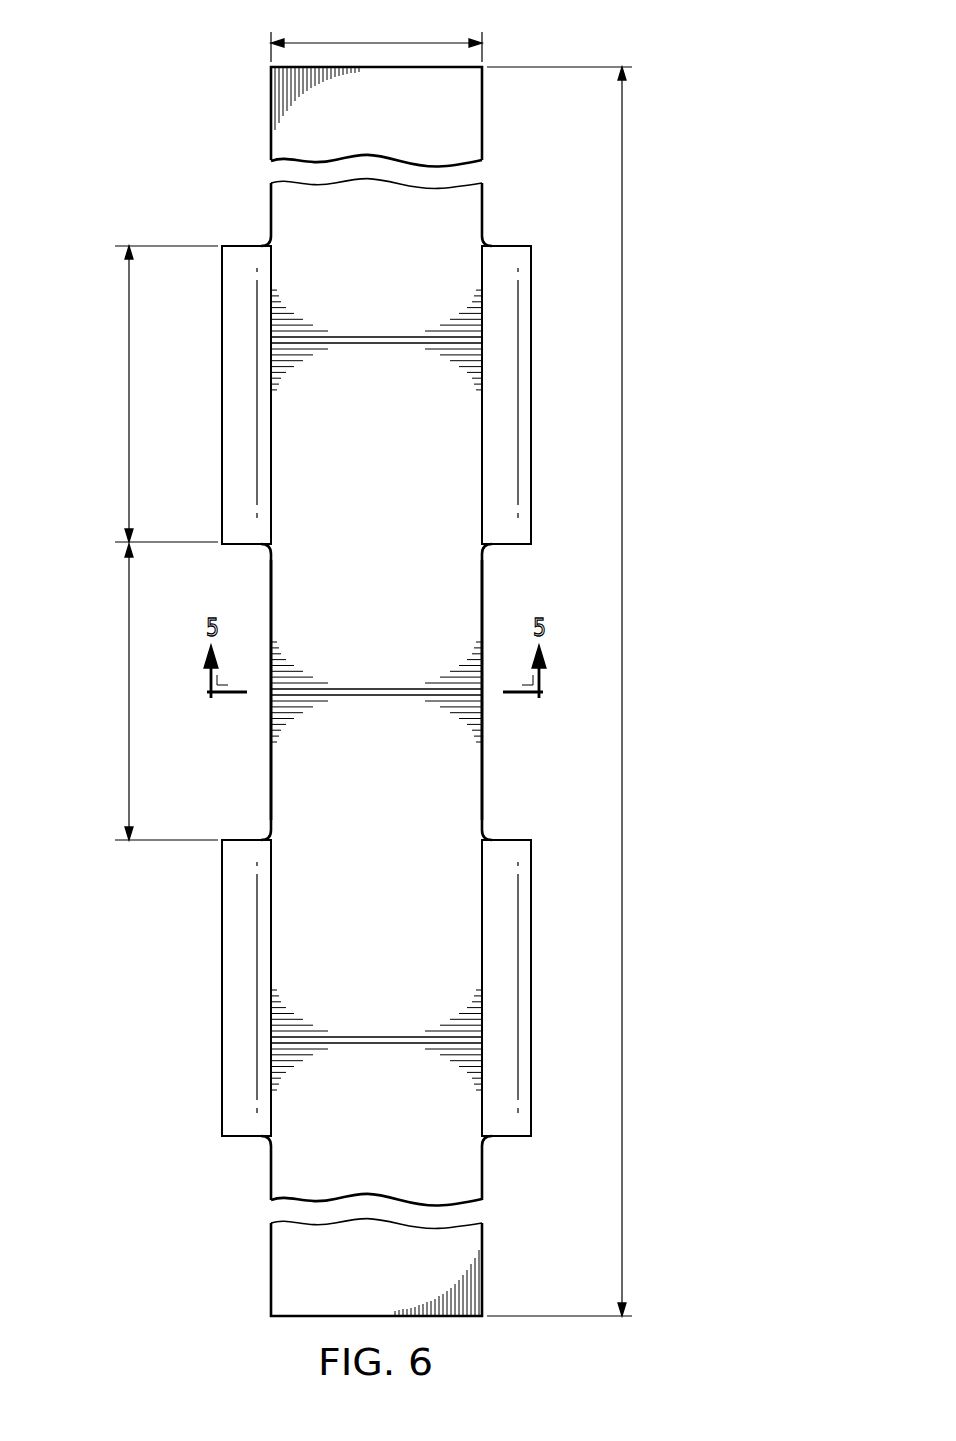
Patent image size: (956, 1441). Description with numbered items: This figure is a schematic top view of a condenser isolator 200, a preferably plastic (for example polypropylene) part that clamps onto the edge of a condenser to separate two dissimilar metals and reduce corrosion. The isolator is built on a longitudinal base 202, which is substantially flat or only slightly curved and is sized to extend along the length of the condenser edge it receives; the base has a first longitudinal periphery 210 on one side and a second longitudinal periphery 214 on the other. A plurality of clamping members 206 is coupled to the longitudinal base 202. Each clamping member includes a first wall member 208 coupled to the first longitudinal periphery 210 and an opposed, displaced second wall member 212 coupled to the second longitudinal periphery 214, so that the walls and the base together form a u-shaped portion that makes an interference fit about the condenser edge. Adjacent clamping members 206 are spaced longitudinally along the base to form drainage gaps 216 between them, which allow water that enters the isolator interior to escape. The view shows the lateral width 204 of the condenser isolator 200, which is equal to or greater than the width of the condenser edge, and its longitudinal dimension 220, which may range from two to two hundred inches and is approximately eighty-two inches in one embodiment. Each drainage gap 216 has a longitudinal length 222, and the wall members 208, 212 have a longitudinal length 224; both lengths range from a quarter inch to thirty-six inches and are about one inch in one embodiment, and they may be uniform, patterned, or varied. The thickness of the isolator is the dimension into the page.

The condenser isolator 200 is at (268, 1175).
The longitudinal base 202 is at (473, 603).
The lateral width 204 is at (318, 43).
The clamping members 206 is at (230, 330).
The first wall member 208 is at (222, 473).
The first longitudinal periphery 210 is at (271, 210).
The second wall member 212 is at (531, 473).
The second longitudinal periphery 214 is at (482, 210).
The drainage gaps 216 is at (236, 767).
The longitudinal dimension 220 is at (622, 692).
The longitudinal length of drainage gap 222 is at (129, 692).
The longitudinal length of wall members 224 is at (129, 396).